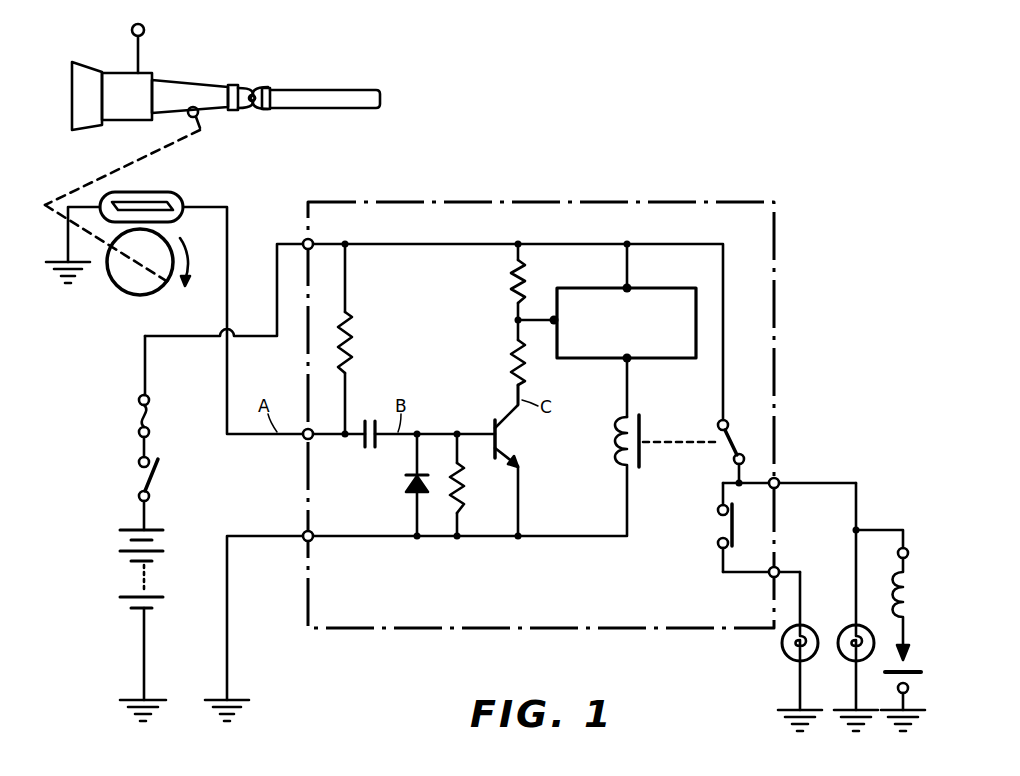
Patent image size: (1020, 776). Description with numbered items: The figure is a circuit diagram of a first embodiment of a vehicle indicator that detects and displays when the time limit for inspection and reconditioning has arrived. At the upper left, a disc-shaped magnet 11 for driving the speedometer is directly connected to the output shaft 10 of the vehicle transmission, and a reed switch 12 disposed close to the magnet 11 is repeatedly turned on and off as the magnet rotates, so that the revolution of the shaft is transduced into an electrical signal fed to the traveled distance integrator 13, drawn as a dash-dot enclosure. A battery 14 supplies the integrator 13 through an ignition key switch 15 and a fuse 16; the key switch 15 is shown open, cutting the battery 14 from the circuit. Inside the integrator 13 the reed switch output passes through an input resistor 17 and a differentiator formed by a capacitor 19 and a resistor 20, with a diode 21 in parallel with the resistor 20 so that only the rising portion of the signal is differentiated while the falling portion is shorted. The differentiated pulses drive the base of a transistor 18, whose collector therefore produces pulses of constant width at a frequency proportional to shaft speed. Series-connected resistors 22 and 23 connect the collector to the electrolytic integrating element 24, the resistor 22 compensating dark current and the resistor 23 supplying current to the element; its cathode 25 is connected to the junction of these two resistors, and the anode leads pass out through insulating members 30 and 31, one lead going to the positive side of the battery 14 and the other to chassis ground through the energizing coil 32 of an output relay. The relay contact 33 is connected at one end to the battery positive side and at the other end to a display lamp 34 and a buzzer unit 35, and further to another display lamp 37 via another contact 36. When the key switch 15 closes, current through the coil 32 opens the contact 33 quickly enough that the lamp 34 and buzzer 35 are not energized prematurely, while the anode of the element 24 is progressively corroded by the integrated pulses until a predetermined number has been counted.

The output shaft 10 is at (177, 84).
The magnet 11 is at (110, 282).
The reed switch 12 is at (160, 192).
The traveled distance integrator 13 is at (592, 202).
The battery 14 is at (130, 562).
The ignition key switch 15 is at (140, 476).
The fuse 16 is at (140, 411).
The input resistor 17 is at (353, 325).
The transistor 18 is at (507, 416).
The capacitor 19 is at (361, 446).
The resistor 20 is at (467, 488).
The diode 21 is at (404, 486).
The resistor 22 is at (510, 289).
The resistor 23 is at (508, 357).
The electrolytic integrating element 24 is at (654, 361).
The cathode 25 is at (550, 314).
The electrical insulating member 30 is at (635, 287).
The electrical insulating member 31 is at (618, 363).
The energizing coil 32 is at (615, 439).
The contact 33 is at (731, 438).
The display lamp 34 is at (841, 625).
The buzzer unit 35 is at (895, 596).
The contact 36 is at (715, 528).
The display lamp 37 is at (782, 656).